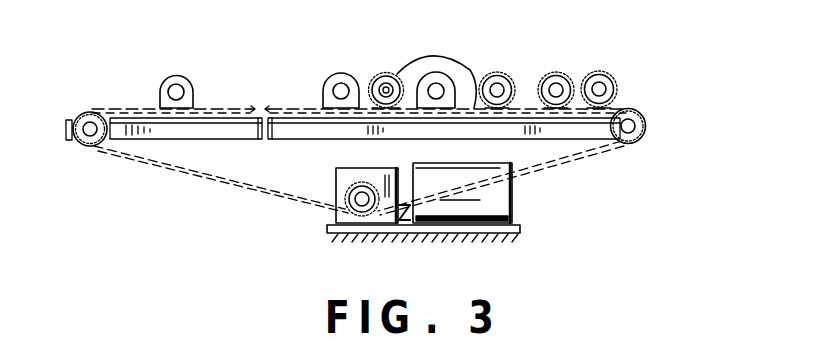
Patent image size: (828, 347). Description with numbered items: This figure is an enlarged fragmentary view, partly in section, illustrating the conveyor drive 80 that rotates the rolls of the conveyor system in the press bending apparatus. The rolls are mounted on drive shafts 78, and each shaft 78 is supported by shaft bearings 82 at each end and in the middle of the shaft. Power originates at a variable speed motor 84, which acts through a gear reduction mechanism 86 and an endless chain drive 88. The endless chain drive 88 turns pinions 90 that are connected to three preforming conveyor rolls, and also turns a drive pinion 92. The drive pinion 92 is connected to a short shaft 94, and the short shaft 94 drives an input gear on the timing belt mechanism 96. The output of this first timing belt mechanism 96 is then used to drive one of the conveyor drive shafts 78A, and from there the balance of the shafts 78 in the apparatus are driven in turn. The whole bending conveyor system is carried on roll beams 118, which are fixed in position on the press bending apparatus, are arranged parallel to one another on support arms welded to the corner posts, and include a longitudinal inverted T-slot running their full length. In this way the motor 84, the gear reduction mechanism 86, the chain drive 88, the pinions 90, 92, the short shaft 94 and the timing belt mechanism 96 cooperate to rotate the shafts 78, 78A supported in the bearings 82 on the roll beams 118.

The drive shaft 78 is at (167, 90).
The conveyor drive shaft 78A is at (437, 80).
The conveyor drive 80 is at (632, 176).
The shaft bearing 82 is at (182, 82).
The variable speed motor 84 is at (510, 207).
The gear reduction mechanism 86 is at (336, 178).
The endless chain drive 88 is at (205, 180).
The pinion 90 is at (593, 72).
The drive pinion 92 is at (384, 74).
The short shaft 94 is at (385, 97).
The timing belt mechanism 96 is at (455, 70).
The roll beam 118 is at (168, 136).